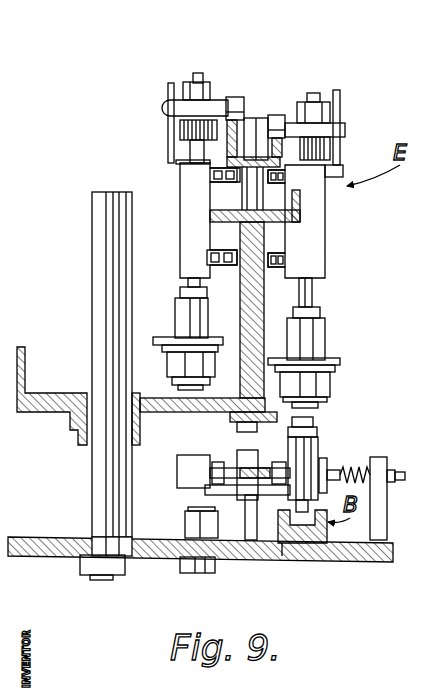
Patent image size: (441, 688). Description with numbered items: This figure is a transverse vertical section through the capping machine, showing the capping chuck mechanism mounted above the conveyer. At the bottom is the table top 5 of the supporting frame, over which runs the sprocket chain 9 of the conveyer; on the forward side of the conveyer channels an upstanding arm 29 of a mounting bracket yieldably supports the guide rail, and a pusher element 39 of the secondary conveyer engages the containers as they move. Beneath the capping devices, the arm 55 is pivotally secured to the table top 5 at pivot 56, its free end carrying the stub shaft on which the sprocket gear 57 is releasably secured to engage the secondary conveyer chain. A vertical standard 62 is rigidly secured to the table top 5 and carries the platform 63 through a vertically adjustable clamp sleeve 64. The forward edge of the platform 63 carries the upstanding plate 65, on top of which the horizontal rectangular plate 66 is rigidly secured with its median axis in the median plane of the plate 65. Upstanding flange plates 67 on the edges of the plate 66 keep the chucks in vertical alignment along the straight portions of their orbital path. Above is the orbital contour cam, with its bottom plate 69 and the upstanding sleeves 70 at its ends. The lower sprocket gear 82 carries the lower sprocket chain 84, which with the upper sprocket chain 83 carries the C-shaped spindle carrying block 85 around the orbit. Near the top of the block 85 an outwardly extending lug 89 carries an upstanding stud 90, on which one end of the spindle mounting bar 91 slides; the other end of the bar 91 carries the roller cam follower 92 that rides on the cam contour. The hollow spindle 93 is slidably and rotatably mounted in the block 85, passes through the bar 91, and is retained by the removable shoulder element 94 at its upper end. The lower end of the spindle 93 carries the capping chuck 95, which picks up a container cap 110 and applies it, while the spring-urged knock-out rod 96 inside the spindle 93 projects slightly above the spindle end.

The table top 5 is at (30, 540).
The sprocket chain 9 is at (282, 544).
The upstanding arm 29 is at (380, 458).
The pusher element 39 is at (178, 463).
The arm 55 is at (186, 524).
The pivot 56 is at (195, 573).
The sprocket gear 57 is at (238, 460).
The vertical standard 62 is at (94, 262).
The platform 63 is at (150, 397).
The clamp sleeve 64 is at (75, 456).
The upstanding plate 65 is at (252, 284).
The rectangular plate 66 is at (283, 228).
The flange plate 67 is at (300, 200).
The bottom plate 69 is at (195, 150).
The sleeve 70 is at (249, 118).
The lower sprocket gear 82 is at (216, 246).
The sprocket chain 83 is at (207, 161).
The sprocket chain 84 is at (206, 258).
The spindle carrying block 85 is at (186, 210).
The lug 89 is at (185, 172).
The stud 90 is at (168, 86).
The spindle mounting bar 91 is at (346, 130).
The roller cam follower 92 is at (237, 97).
The hollow spindle 93 is at (189, 280).
The shoulder element 94 is at (163, 107).
The capping chuck 95 is at (176, 316).
The knock-out rod 96 is at (198, 73).
The container cap 110 is at (318, 421).